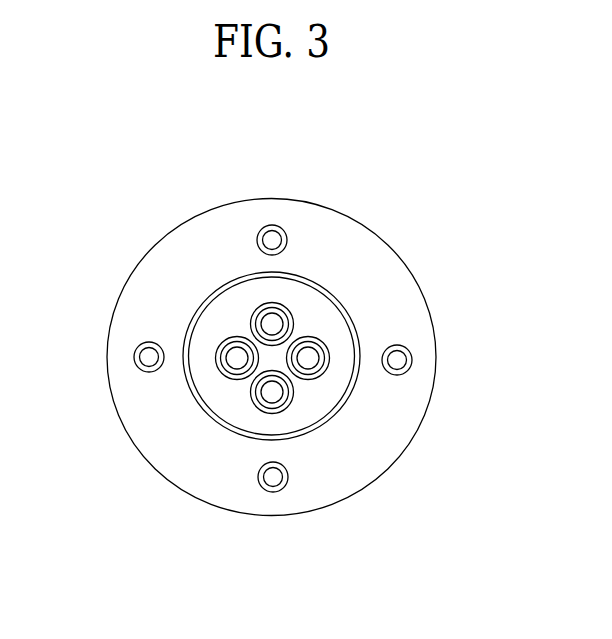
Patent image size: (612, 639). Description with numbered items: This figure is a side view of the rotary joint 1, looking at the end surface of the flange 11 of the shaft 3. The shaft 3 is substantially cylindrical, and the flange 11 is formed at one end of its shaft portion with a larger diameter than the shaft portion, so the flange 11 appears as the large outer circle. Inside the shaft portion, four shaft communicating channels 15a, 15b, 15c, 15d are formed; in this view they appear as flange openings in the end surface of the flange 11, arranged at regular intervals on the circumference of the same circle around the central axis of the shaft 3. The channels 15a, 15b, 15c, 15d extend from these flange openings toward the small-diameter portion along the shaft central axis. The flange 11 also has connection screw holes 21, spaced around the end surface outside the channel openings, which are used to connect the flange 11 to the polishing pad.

The rotary joint 1 is at (462, 126).
The shaft 3 is at (443, 230).
The flange 11 is at (383, 273).
The shaft communicating channel 15a is at (281, 305).
The shaft communicating channel 15b is at (222, 343).
The shaft communicating channel 15c is at (264, 410).
The shaft communicating channel 15d is at (325, 373).
The connection screw hole 21 is at (266, 224).